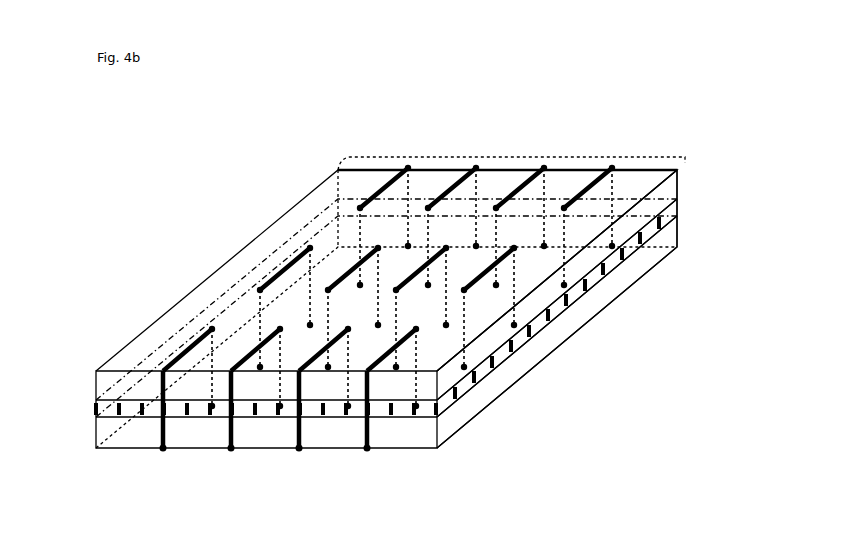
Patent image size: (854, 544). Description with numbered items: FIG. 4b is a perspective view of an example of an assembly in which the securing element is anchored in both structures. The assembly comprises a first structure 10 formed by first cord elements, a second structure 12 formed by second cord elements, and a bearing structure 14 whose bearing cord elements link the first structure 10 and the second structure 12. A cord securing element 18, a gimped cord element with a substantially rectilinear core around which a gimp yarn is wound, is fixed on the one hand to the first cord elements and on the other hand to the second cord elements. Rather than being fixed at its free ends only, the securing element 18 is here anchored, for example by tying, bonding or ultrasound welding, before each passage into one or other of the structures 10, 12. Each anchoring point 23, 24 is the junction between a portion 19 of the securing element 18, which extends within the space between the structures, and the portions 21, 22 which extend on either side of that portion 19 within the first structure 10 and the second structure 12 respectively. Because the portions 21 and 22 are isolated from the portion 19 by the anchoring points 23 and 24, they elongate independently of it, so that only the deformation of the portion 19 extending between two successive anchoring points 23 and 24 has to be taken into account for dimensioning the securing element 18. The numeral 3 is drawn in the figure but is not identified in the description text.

The bracket module 3 is at (523, 112).
The first structure 10 is at (668, 252).
The second structure 12 is at (545, 345).
The bearing structure 14 is at (632, 286).
The cord securing element 18 is at (357, 206).
The portion of the securing element 19 is at (212, 407).
The portion of the securing element within the first structure 21 is at (518, 186).
The portion of the securing element within the second structure 22 is at (468, 396).
The anchoring point 23 is at (345, 212).
The anchoring point 24 is at (340, 200).